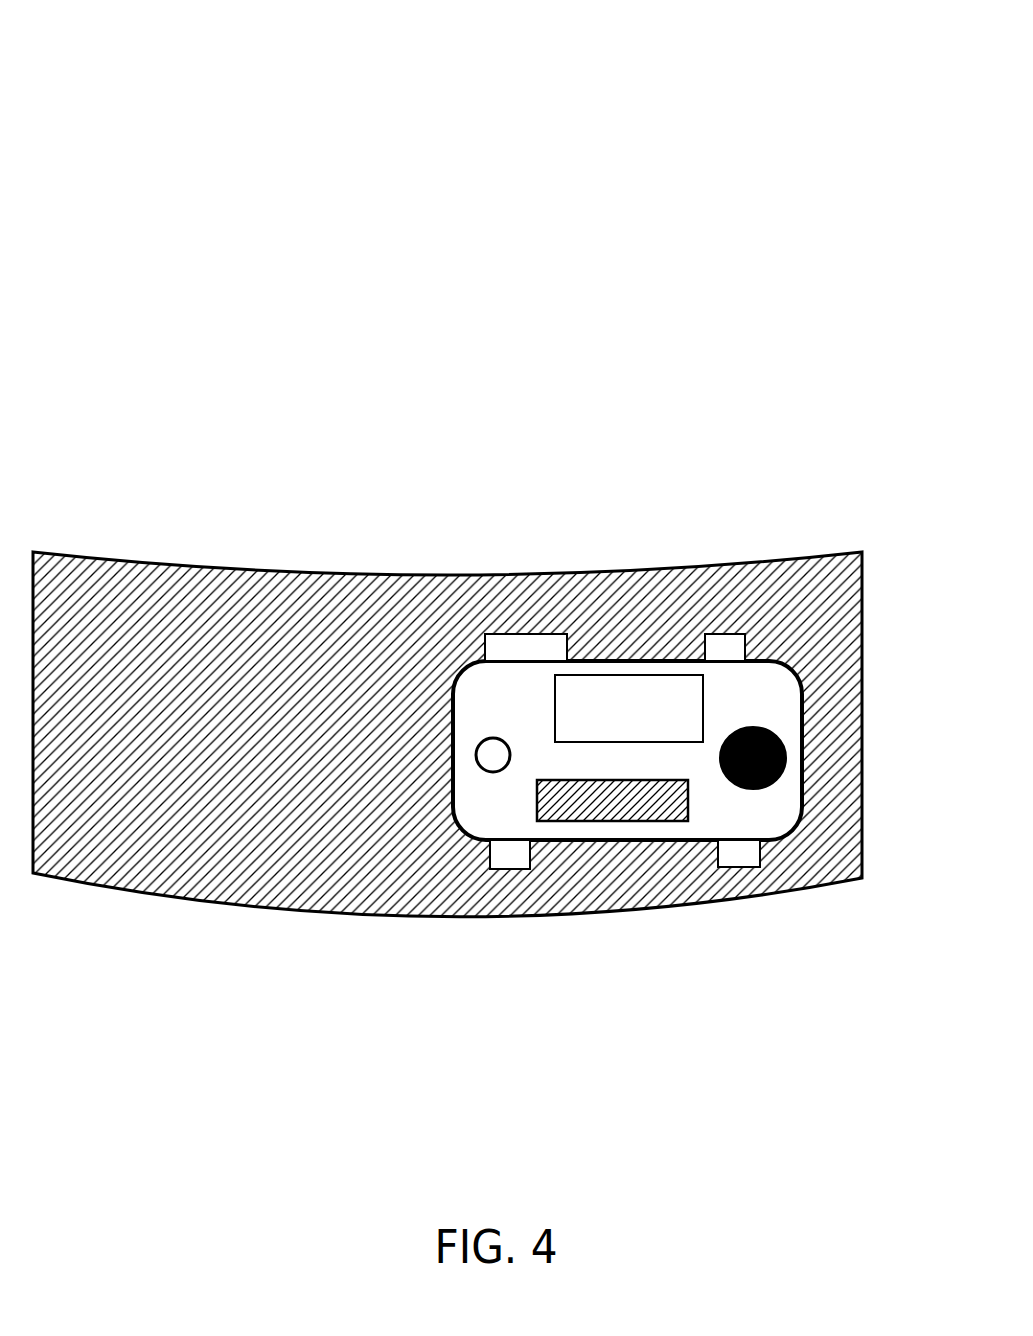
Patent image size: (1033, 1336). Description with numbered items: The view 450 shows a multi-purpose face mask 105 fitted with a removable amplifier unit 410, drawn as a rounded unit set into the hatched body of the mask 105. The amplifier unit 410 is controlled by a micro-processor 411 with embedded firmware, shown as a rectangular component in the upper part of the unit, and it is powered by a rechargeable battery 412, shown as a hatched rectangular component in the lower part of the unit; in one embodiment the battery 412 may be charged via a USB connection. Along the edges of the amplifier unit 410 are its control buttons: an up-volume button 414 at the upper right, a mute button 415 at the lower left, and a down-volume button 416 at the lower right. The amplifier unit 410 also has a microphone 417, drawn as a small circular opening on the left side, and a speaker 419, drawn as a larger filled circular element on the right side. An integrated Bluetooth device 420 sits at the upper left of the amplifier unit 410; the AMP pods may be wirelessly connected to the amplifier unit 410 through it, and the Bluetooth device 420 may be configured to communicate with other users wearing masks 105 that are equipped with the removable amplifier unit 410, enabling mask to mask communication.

The view of device 450 is at (75, 28).
The multi-purpose face mask 105 is at (185, 568).
The removable amplifier unit 410 is at (804, 702).
The micro-processor 411 is at (630, 673).
The rechargeable battery 412 is at (642, 795).
The up-volume button 414 is at (745, 634).
The mute button 415 is at (512, 845).
The down-volume button 416 is at (741, 855).
The microphone 417 is at (484, 772).
The speaker 419 is at (790, 768).
The integrated Bluetooth device 420 is at (522, 638).